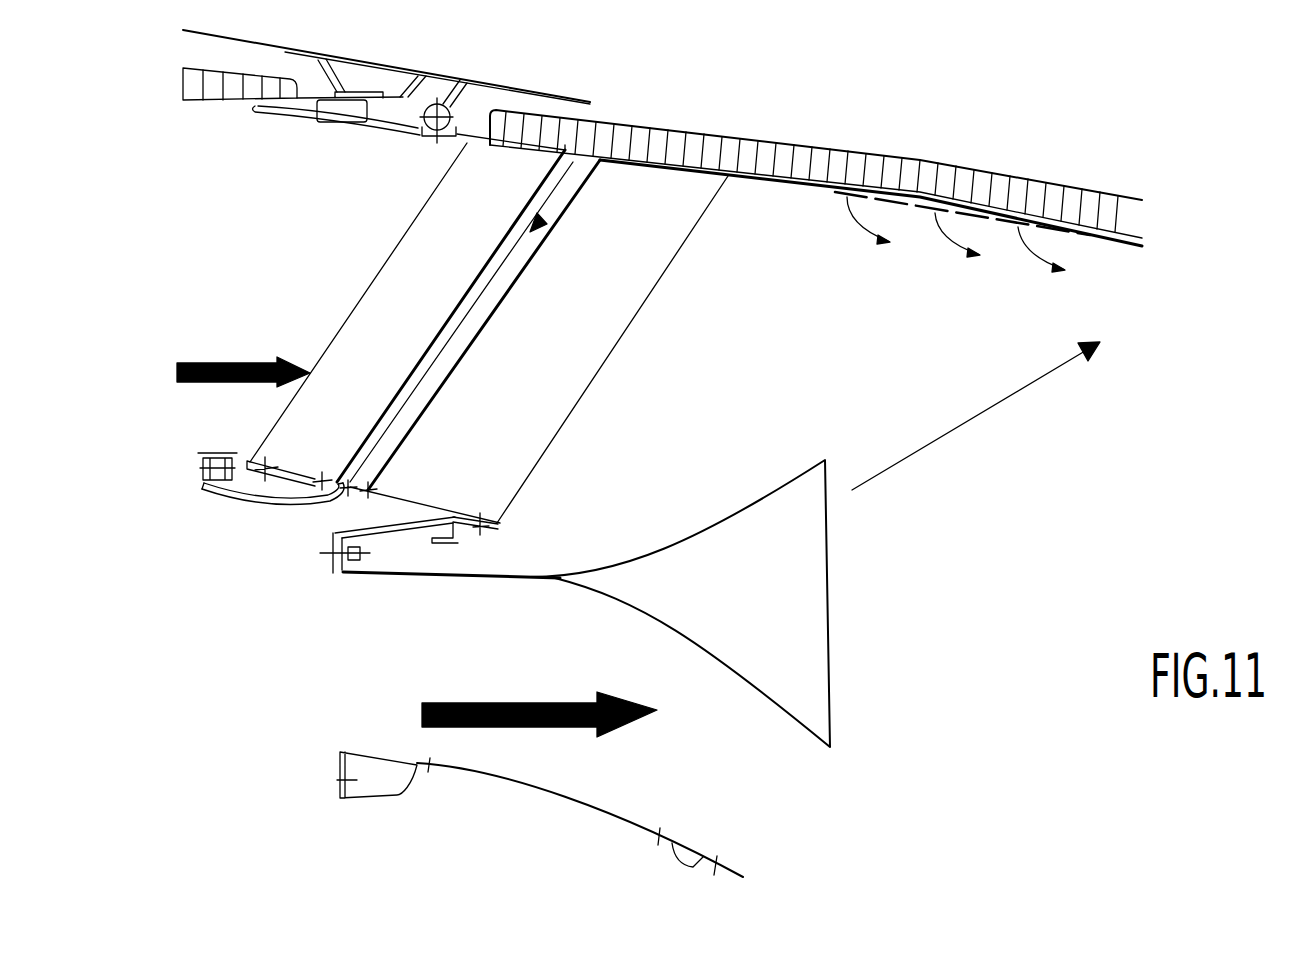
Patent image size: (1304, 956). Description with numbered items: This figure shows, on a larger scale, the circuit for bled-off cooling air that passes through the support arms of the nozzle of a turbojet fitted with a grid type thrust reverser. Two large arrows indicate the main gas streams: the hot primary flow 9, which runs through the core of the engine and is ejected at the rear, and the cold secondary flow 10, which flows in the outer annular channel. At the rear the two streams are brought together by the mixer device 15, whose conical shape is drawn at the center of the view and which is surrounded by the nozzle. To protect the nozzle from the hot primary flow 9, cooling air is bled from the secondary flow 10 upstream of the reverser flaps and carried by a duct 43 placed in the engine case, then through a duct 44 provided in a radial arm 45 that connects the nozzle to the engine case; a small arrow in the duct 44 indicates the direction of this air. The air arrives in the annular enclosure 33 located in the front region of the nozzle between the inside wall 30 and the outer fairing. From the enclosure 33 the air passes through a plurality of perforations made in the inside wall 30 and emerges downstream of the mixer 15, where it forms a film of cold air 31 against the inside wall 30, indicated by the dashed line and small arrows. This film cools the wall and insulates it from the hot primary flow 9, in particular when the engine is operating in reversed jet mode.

The primary flow 9 is at (538, 700).
The secondary flow 10 is at (203, 363).
The mixer device 15 is at (783, 503).
The inside wall 30 is at (795, 190).
The film of cold air 31 is at (938, 243).
The annular enclosure 33 is at (703, 123).
The duct 43 is at (280, 503).
The duct 44 is at (560, 193).
The radial arm 45 is at (433, 238).